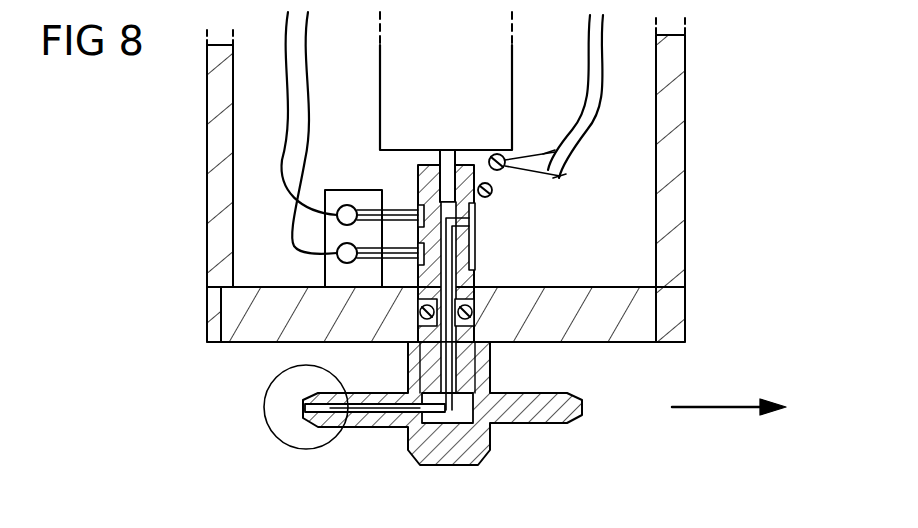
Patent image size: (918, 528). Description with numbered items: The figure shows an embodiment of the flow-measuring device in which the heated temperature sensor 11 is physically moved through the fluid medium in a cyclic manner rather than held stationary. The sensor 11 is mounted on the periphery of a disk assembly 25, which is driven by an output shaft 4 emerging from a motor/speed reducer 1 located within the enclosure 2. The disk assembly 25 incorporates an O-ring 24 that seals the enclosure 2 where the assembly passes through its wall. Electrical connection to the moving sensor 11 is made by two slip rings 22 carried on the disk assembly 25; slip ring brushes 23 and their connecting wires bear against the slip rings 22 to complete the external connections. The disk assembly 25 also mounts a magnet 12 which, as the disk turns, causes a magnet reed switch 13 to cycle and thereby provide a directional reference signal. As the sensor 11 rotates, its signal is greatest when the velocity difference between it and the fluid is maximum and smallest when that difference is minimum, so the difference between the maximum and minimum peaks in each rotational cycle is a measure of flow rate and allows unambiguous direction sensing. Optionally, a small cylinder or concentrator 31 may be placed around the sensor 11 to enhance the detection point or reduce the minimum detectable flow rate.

The motor/speed reducer 1 is at (512, 92).
The enclosure 2 is at (685, 97).
The output shaft 4 is at (420, 185).
The heated temperature sensor 11 is at (312, 410).
The magnet 12 is at (492, 194).
The magnet reed switch 13 is at (505, 170).
The slip rings 22 is at (475, 218).
The slip ring brushes 23 is at (325, 258).
The O-ring 24 is at (474, 312).
The disk assembly 25 is at (490, 438).
The cylinder and/or concentrator 31 is at (265, 428).